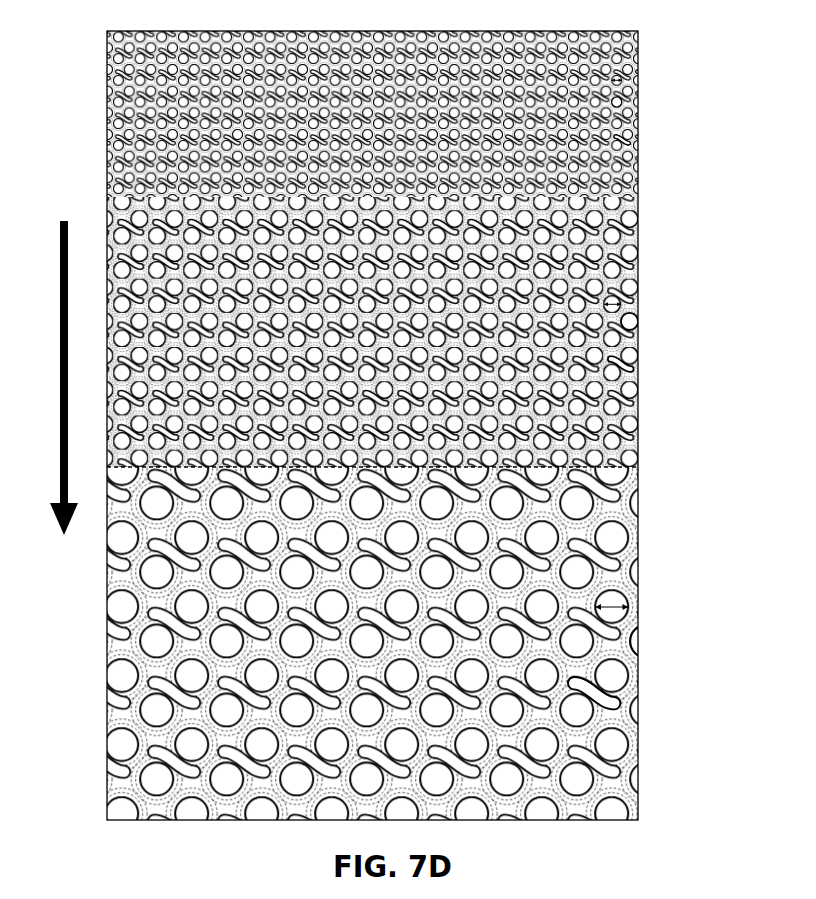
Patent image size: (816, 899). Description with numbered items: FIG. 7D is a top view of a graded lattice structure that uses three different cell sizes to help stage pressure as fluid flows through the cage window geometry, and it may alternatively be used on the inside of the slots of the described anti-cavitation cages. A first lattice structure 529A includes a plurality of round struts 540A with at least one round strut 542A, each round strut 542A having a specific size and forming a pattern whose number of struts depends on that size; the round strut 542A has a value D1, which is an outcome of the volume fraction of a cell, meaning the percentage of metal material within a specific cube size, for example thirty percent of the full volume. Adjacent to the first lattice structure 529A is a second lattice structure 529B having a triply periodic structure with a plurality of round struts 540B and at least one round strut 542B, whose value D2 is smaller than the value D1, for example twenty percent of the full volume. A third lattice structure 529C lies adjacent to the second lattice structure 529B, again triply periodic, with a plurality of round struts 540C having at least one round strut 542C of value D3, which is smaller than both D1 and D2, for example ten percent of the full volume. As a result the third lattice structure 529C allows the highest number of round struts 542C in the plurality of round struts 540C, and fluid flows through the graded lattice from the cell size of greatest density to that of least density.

The plurality of round struts 540A is at (655, 610).
The plurality of round struts 540B is at (655, 308).
The plurality of round struts 540C is at (655, 86).
The round strut 542A is at (634, 633).
The round strut 542B is at (636, 325).
The round strut 542C is at (622, 99).
The first lattice structure 529A is at (626, 698).
The second lattice structure 529B is at (629, 369).
The third lattice structure 529C is at (630, 146).
The value of the round strut D1 is at (614, 596).
The value of the round strut D2 is at (638, 276).
The value of the round strut D3 is at (637, 60).